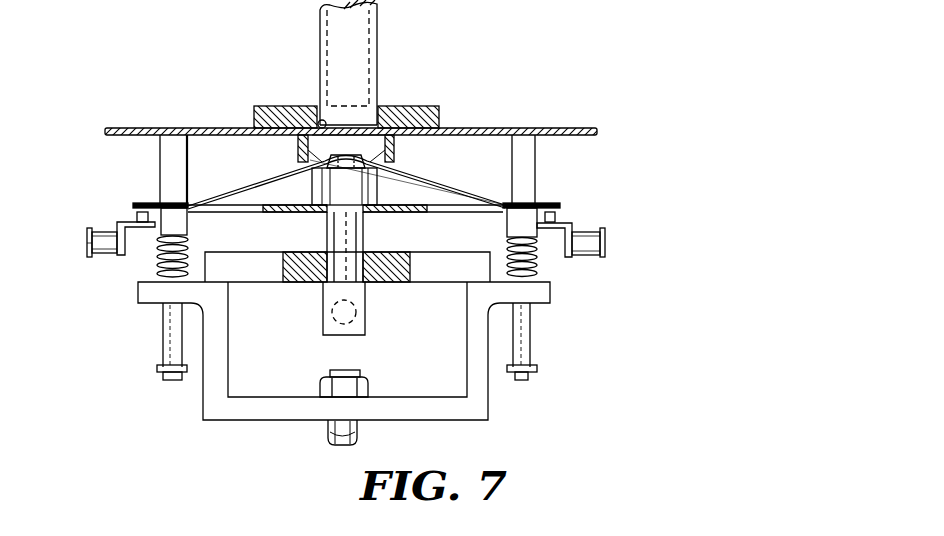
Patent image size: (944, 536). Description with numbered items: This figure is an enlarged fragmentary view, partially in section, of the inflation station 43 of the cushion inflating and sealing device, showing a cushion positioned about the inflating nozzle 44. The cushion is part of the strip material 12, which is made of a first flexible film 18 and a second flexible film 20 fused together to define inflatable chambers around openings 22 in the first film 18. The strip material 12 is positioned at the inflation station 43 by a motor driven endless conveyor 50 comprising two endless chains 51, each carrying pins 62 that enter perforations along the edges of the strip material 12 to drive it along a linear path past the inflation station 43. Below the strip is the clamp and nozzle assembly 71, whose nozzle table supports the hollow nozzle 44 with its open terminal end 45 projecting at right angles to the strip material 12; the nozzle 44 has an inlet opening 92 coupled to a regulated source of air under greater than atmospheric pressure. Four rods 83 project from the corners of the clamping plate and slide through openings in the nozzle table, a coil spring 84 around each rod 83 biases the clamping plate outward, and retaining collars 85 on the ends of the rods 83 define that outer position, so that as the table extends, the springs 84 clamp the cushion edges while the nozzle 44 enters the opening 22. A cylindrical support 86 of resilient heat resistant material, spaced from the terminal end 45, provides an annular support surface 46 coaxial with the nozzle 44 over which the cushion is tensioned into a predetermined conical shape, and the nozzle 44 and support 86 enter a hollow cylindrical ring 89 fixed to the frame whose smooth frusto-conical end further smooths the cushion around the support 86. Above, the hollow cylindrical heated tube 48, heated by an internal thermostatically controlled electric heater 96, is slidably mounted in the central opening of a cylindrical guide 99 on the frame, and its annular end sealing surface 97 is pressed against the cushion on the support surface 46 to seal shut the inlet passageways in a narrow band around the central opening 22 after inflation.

The electric heater 96 is at (368, 38).
The heated tube 48 is at (377, 72).
The cylindrical guide 99 is at (435, 112).
The end sealing surface 97 is at (318, 122).
The terminal end 45 is at (347, 157).
The nozzle 44 is at (350, 157).
The hollow cylindrical ring 89 is at (396, 153).
The inflation station 43 is at (444, 165).
The second flexible film 20 is at (243, 186).
The strip material 12 is at (555, 201).
The pins 62 is at (138, 213).
The endless chains 51 is at (102, 232).
The endless conveyor 50 is at (87, 254).
The first flexible film 18 is at (272, 190).
The openings 22 is at (334, 170).
The cylindrical support 86 is at (364, 198).
The support surface 46 is at (378, 183).
The coil spring 84 is at (157, 272).
The rods 83 is at (167, 334).
The retaining collars 85 is at (160, 368).
The inlet opening 92 is at (352, 318).
The clamp and nozzle assembly 71 is at (236, 426).